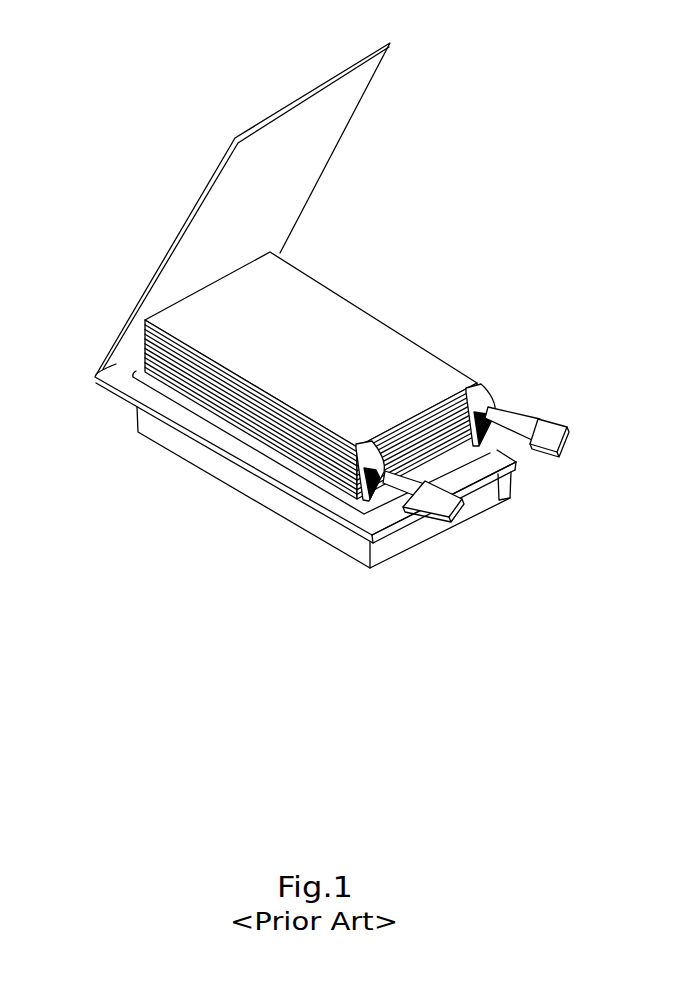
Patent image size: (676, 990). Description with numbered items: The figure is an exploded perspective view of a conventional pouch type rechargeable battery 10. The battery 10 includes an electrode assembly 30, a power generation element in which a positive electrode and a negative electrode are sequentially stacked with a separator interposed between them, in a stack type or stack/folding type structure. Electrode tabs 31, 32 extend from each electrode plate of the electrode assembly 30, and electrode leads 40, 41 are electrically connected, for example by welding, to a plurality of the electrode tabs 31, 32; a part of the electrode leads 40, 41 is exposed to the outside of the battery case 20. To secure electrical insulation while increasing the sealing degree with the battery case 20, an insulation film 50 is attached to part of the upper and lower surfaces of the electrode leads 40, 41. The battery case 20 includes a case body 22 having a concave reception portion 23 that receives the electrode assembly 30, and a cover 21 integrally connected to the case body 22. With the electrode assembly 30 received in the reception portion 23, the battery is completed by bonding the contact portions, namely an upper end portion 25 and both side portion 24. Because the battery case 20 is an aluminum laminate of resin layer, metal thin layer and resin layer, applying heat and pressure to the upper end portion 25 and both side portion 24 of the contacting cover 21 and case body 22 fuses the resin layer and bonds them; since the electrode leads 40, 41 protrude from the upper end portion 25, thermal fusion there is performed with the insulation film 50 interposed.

The pouch type rechargeable battery 10 is at (67, 139).
The battery case 20 is at (292, 327).
The cover 21 is at (165, 260).
The case body 22 is at (250, 500).
The reception portion 23 is at (196, 418).
The both side portion 24 is at (223, 451).
The upper end portion 25 is at (498, 480).
The electrode assembly 30 is at (324, 407).
The electrode tab 31 is at (355, 488).
The electrode tab 32 is at (489, 404).
The electrode lead 40 is at (388, 482).
The electrode lead 41 is at (516, 413).
The insulation film 50 is at (412, 513).